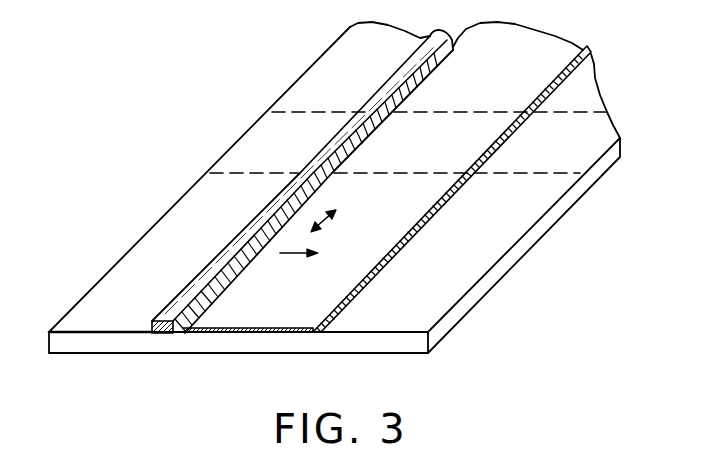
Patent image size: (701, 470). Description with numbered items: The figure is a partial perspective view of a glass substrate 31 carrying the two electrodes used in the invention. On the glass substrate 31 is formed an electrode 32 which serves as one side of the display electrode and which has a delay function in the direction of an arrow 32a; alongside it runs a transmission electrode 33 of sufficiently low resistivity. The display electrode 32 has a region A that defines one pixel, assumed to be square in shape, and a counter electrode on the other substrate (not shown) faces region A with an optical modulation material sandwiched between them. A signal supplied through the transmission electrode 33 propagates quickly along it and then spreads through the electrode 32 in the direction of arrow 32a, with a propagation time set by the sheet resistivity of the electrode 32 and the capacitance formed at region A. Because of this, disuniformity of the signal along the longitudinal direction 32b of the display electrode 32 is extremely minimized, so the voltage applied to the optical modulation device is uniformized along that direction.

The glass substrate 31 is at (133, 346).
The display electrode 32 is at (351, 269).
The direction of delay propagation 32a is at (295, 255).
The longitudinal direction of display electrode 32b is at (326, 224).
The transmission electrode 33 is at (236, 246).
The region A is at (468, 128).